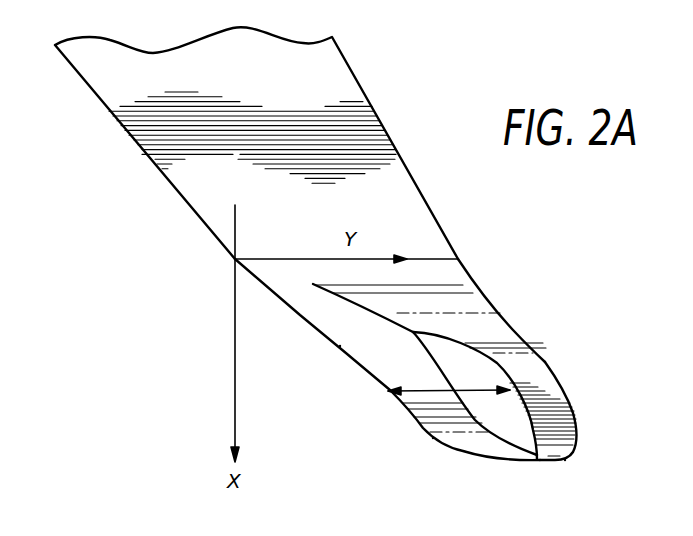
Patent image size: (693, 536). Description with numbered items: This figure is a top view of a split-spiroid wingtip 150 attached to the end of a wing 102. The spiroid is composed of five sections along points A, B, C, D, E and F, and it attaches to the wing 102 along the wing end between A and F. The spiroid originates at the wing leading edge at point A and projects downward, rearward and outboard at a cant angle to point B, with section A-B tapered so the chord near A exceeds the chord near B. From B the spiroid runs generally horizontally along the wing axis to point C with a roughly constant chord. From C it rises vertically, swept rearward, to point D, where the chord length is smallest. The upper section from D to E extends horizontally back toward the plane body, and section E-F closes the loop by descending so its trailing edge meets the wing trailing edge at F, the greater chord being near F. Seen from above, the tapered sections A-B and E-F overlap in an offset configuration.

The airfoil body 102 is at (324, 68).
The split-spiroid wingtip 150 is at (558, 291).
The point A is at (329, 333).
The point B is at (340, 346).
The point C is at (433, 438).
The point D is at (565, 461).
The point E is at (545, 362).
The point F is at (469, 261).